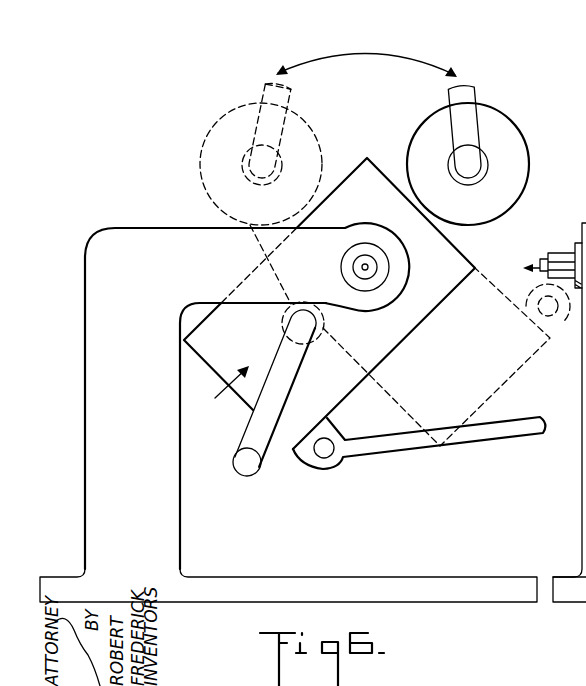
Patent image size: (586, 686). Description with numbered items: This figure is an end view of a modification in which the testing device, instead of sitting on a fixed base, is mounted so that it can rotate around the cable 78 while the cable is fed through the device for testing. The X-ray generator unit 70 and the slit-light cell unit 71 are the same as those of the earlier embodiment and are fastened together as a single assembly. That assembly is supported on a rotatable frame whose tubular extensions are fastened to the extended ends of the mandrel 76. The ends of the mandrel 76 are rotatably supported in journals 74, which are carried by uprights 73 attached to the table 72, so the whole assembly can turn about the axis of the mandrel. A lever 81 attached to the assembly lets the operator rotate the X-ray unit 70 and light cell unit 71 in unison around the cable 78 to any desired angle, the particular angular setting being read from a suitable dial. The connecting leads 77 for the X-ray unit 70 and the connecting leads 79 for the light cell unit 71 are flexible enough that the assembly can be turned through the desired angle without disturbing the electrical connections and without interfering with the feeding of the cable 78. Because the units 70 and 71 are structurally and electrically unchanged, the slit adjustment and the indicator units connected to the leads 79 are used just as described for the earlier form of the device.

The X-ray generator unit 70 is at (514, 123).
The slit-light cell unit 71 is at (219, 390).
The table 72 is at (85, 391).
The uprights 73 is at (163, 531).
The journals 74 is at (390, 230).
The mandrel 76 is at (378, 278).
The connecting leads 77 is at (458, 100).
The cable 78 is at (376, 262).
The connecting leads 79 is at (263, 438).
The lever 81 is at (393, 442).